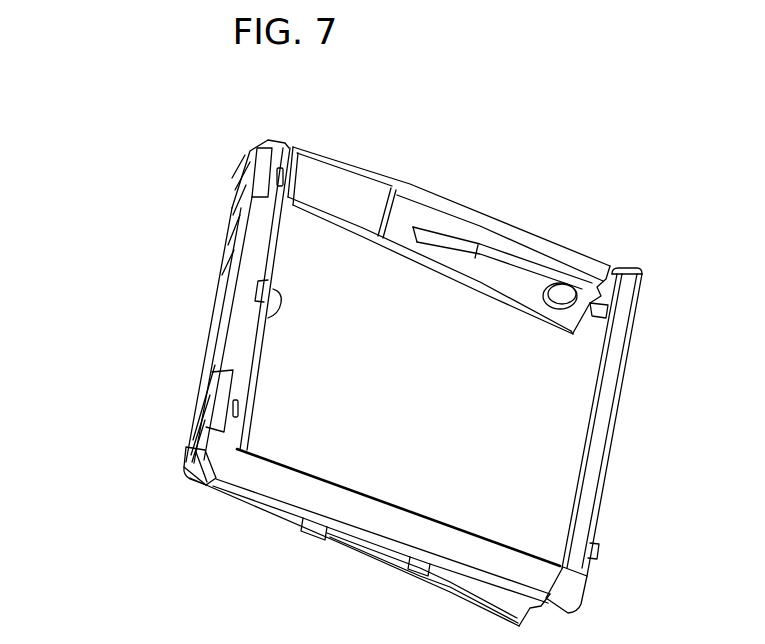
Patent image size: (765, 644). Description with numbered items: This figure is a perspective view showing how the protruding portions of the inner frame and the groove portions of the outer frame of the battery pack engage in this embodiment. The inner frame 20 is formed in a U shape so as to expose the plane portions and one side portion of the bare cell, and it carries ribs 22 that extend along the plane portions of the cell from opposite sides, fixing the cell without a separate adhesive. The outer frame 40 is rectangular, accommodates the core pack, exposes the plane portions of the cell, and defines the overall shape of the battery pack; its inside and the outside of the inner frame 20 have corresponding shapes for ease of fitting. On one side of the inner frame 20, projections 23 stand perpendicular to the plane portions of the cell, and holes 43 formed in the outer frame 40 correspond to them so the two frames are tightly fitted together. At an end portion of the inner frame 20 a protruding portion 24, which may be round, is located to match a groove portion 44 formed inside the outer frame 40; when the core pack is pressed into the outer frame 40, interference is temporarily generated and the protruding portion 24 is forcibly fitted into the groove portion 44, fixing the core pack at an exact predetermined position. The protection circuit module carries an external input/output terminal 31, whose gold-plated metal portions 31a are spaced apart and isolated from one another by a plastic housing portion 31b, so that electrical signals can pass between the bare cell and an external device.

The inner frame 20 is at (289, 153).
The ribs 22 is at (485, 240).
The projections 23 is at (256, 283).
The protruding portion 24 is at (593, 315).
The external input/output terminal 31 is at (75, 330).
The metal portions 31a is at (198, 389).
The housing portion 31b is at (184, 452).
The outer frame 40 is at (441, 198).
The holes 43 is at (267, 316).
The groove portion 44 is at (606, 288).